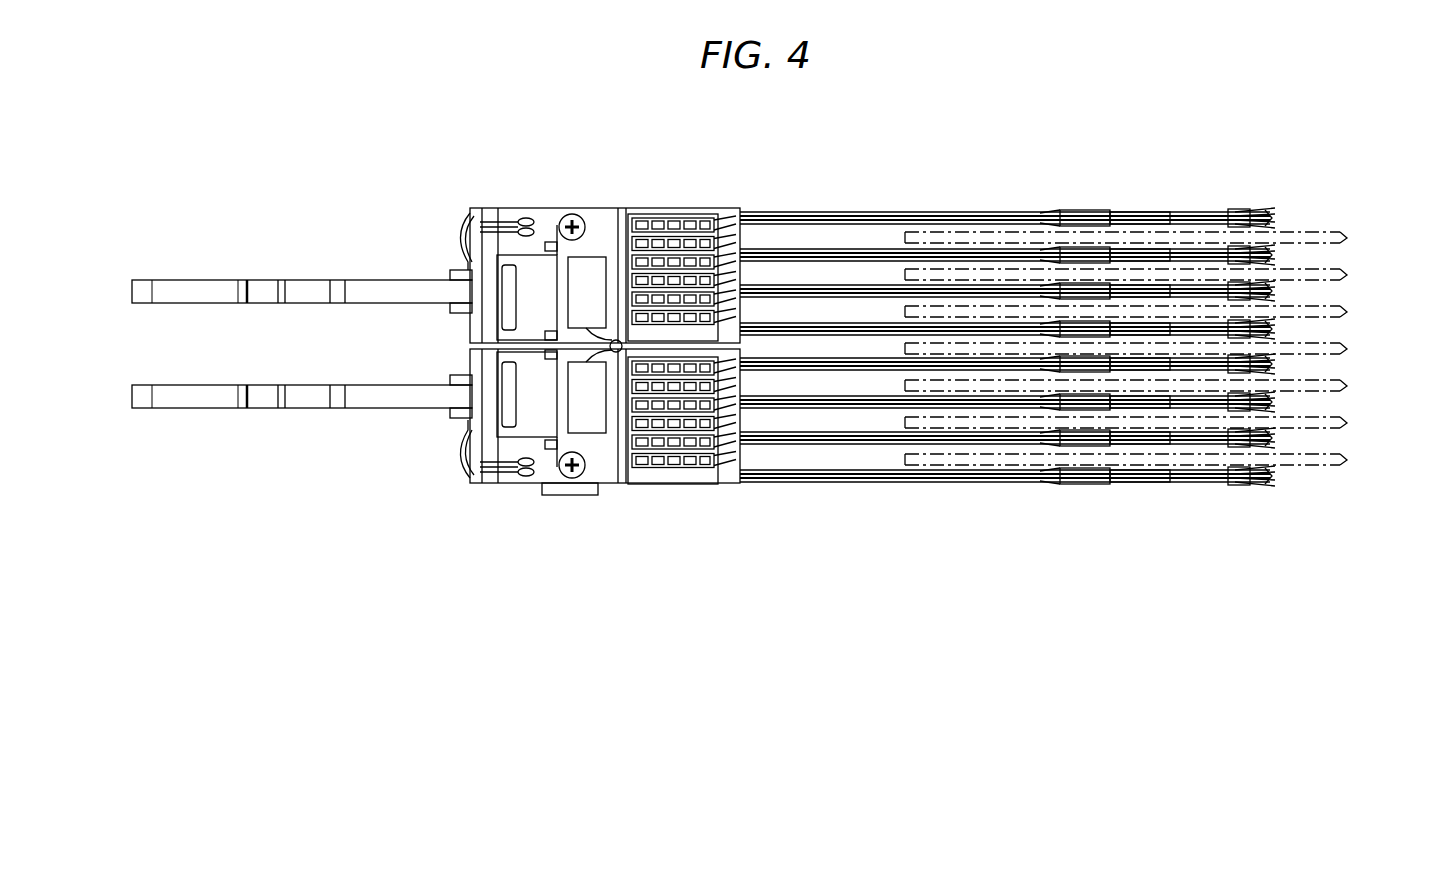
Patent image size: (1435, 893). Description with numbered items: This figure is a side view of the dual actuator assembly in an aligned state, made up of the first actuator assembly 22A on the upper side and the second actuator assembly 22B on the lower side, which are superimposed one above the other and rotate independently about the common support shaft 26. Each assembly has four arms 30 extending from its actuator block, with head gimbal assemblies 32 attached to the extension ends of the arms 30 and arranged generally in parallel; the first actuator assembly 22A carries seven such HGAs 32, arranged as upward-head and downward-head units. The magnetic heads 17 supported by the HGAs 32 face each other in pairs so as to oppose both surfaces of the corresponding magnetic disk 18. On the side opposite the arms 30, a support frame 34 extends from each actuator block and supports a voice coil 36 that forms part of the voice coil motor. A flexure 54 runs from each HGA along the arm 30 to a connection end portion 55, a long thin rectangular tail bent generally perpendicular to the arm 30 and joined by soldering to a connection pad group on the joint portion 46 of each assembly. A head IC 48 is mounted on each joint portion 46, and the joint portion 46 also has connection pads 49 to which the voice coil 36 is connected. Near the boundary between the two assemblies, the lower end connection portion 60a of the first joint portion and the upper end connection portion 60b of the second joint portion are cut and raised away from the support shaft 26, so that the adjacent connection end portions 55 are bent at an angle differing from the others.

The magnetic head 17 is at (1235, 222).
The magnetic disk 18 is at (1330, 232).
The first actuator assembly 22A is at (718, 185).
The second actuator assembly 22B is at (762, 510).
The support shaft 26 is at (558, 496).
The arm 30 is at (888, 320).
The head gimbal assembly 32 is at (1146, 232).
The support frame 34 is at (368, 283).
The voice coil 36 is at (220, 285).
The joint portion 46 is at (590, 212).
The head IC 48 is at (596, 262).
The connection pad 49 is at (530, 218).
The flexure 54 is at (1075, 235).
The connection end portion 55 is at (678, 268).
The lower end connection portion 60a is at (585, 292).
The upper end connection portion 60b is at (586, 397).